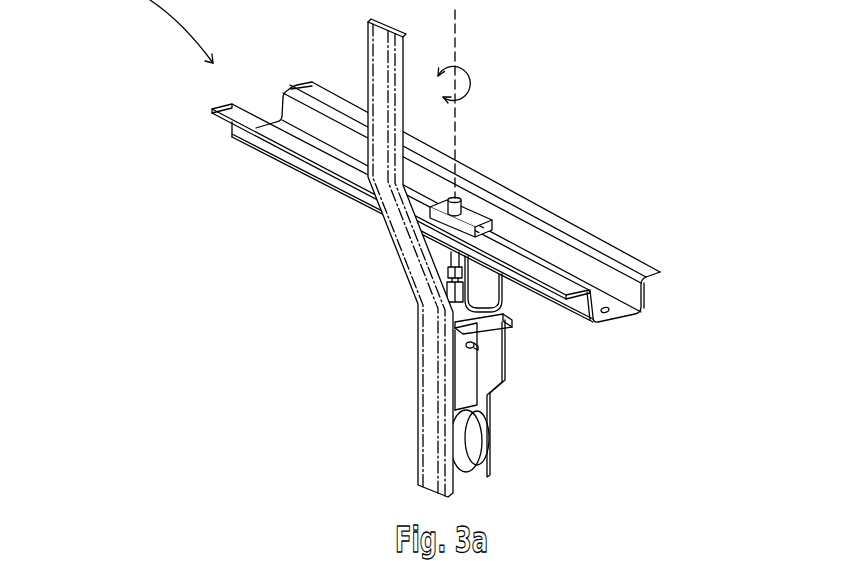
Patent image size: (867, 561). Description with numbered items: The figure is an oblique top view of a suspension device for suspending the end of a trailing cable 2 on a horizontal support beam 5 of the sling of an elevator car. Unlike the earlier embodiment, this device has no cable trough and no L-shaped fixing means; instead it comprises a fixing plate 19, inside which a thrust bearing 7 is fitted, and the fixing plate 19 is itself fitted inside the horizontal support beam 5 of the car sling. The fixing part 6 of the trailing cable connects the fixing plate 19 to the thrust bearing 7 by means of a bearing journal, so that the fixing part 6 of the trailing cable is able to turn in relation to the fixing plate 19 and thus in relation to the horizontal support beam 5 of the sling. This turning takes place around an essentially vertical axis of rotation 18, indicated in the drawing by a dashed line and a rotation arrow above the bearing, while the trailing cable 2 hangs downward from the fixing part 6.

The trailing cable 2 is at (430, 433).
The horizontal support beam 5 is at (627, 260).
The fixing part of the trailing cable 6 is at (502, 412).
The thrust bearing 7 is at (477, 213).
The fixing plate 19 is at (612, 130).
The axis of rotation 18 is at (455, 38).